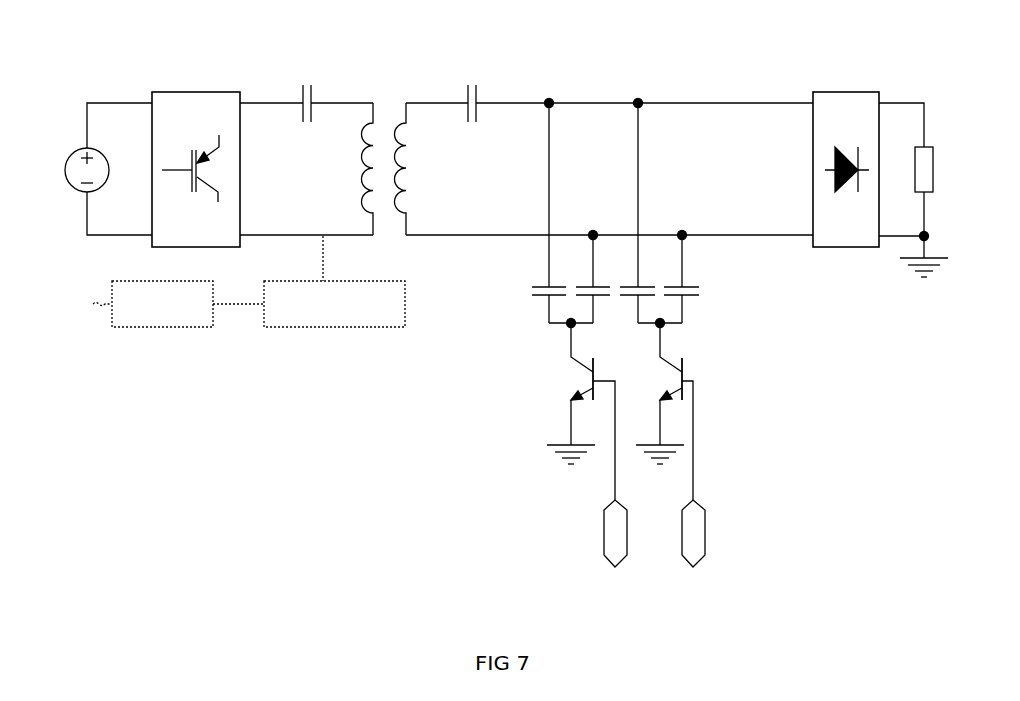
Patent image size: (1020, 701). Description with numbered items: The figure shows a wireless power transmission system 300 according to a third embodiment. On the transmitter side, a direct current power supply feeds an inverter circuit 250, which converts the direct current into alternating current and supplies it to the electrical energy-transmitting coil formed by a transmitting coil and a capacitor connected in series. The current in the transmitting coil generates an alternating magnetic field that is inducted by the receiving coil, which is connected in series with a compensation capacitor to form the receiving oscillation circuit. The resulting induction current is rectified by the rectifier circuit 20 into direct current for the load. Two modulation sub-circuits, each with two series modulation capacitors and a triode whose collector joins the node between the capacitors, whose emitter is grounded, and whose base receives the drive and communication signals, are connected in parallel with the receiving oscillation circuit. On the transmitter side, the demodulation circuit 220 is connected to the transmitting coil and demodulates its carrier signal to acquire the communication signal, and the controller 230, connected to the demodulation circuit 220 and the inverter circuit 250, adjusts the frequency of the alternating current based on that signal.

The wireless power transmission system 300 is at (403, 36).
The inverter circuit 250 is at (188, 100).
The rectifier circuit 20 is at (842, 115).
The controller 230 is at (180, 320).
The demodulation circuit 220 is at (345, 325).